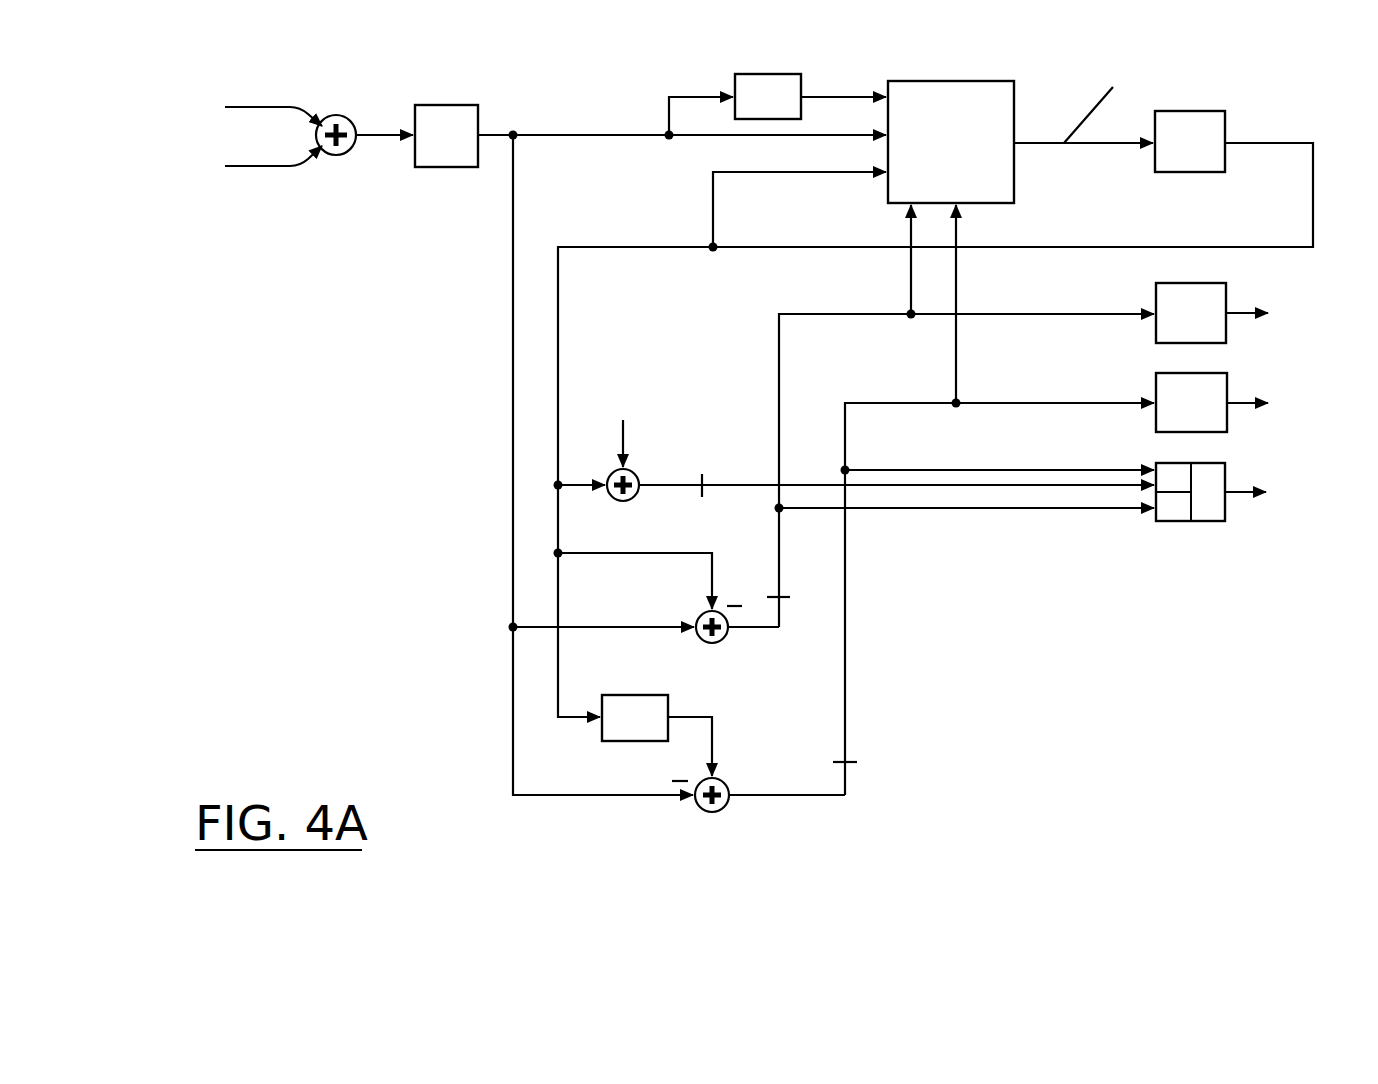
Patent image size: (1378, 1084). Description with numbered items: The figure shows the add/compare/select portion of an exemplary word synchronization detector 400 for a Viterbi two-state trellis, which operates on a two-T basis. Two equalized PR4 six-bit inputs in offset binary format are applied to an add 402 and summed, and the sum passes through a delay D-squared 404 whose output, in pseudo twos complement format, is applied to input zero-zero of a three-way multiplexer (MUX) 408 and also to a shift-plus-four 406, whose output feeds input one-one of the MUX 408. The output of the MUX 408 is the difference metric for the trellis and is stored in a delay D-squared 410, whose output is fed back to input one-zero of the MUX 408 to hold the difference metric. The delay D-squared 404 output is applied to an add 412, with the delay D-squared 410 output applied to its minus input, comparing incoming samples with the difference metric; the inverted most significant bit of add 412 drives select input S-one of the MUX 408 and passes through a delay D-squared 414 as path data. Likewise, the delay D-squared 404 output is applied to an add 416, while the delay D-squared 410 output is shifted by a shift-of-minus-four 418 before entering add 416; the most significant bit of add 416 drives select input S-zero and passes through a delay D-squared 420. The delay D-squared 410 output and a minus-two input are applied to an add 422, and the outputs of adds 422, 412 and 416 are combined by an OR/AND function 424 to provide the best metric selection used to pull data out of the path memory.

The word synchronization detector 400 is at (388, 408).
The add 402 is at (345, 116).
The delay D2 404 is at (455, 105).
The shift +4 406 is at (772, 74).
The three-way multiplexer (MUX) 408 is at (951, 142).
The delay D2 410 is at (1192, 111).
The add 412 is at (703, 613).
The delay D2 414 is at (1195, 283).
The add 416 is at (718, 812).
The shift of −4 418 is at (668, 699).
The delay D2 420 is at (1210, 373).
The add 422 is at (630, 500).
The OR/AND function 424 is at (1191, 521).